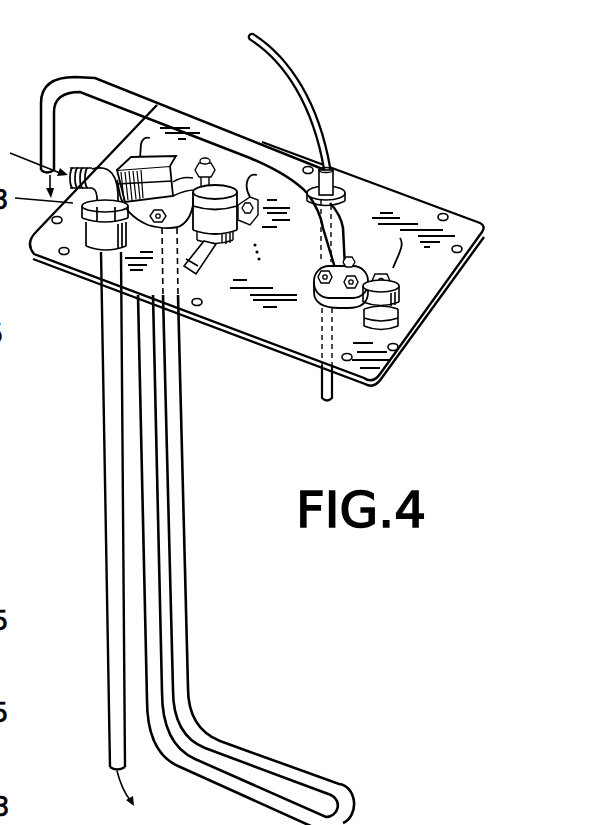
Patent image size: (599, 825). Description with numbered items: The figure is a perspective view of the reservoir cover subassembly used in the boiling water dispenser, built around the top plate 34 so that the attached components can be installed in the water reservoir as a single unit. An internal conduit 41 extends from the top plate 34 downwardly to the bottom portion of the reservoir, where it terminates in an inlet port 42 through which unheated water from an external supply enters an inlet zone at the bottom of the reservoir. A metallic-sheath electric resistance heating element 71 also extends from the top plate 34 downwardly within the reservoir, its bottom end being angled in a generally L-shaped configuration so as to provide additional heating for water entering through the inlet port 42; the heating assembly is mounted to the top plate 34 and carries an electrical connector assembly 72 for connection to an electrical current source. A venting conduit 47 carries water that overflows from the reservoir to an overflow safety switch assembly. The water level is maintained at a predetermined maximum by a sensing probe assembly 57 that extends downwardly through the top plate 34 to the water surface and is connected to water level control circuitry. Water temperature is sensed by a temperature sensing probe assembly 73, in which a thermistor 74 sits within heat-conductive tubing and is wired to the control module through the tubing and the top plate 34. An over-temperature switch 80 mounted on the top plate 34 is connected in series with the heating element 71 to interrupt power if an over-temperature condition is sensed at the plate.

The top plate 34 is at (403, 203).
The venting conduit 47 is at (181, 117).
The temperature sensing probe assembly 73 is at (357, 183).
The thermistor 74 is at (320, 387).
The sensing probe assembly 57 is at (377, 316).
The electrical connector assembly 72 is at (120, 168).
The over-temperature switch 80 is at (221, 244).
The internal conduit 41 is at (110, 484).
The inlet port 42 is at (110, 768).
The electric resistance heating element 71 is at (187, 706).